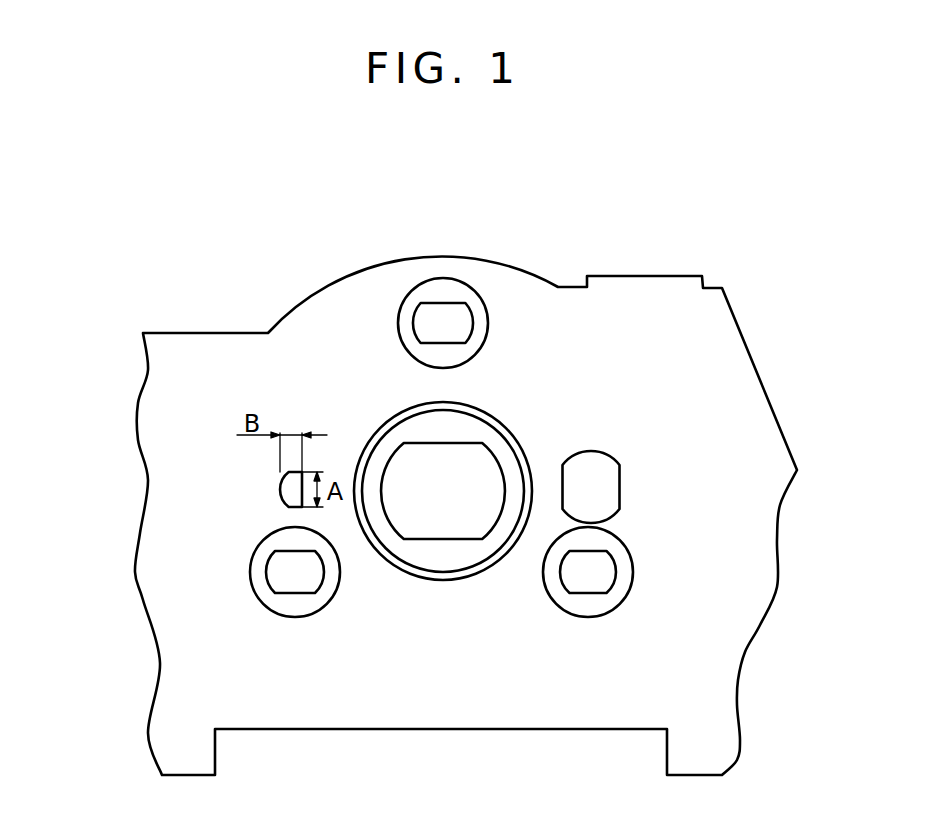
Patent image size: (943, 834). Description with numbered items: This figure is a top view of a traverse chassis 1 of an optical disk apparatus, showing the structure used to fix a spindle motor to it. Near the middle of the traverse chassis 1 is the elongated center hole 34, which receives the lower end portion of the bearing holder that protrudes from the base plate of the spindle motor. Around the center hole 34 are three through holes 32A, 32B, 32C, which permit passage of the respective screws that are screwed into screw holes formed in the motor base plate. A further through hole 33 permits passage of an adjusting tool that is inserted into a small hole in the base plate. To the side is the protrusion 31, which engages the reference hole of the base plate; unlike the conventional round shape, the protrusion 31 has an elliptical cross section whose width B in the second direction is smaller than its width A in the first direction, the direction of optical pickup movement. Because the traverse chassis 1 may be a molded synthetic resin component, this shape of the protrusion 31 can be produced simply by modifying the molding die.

The traverse chassis 1 is at (341, 277).
The protrusion 31 is at (280, 497).
The through hole 32A is at (448, 300).
The through hole 32B is at (615, 570).
The through hole 32C is at (250, 570).
The through hole 33 is at (620, 485).
The elongated center hole 34 is at (390, 453).